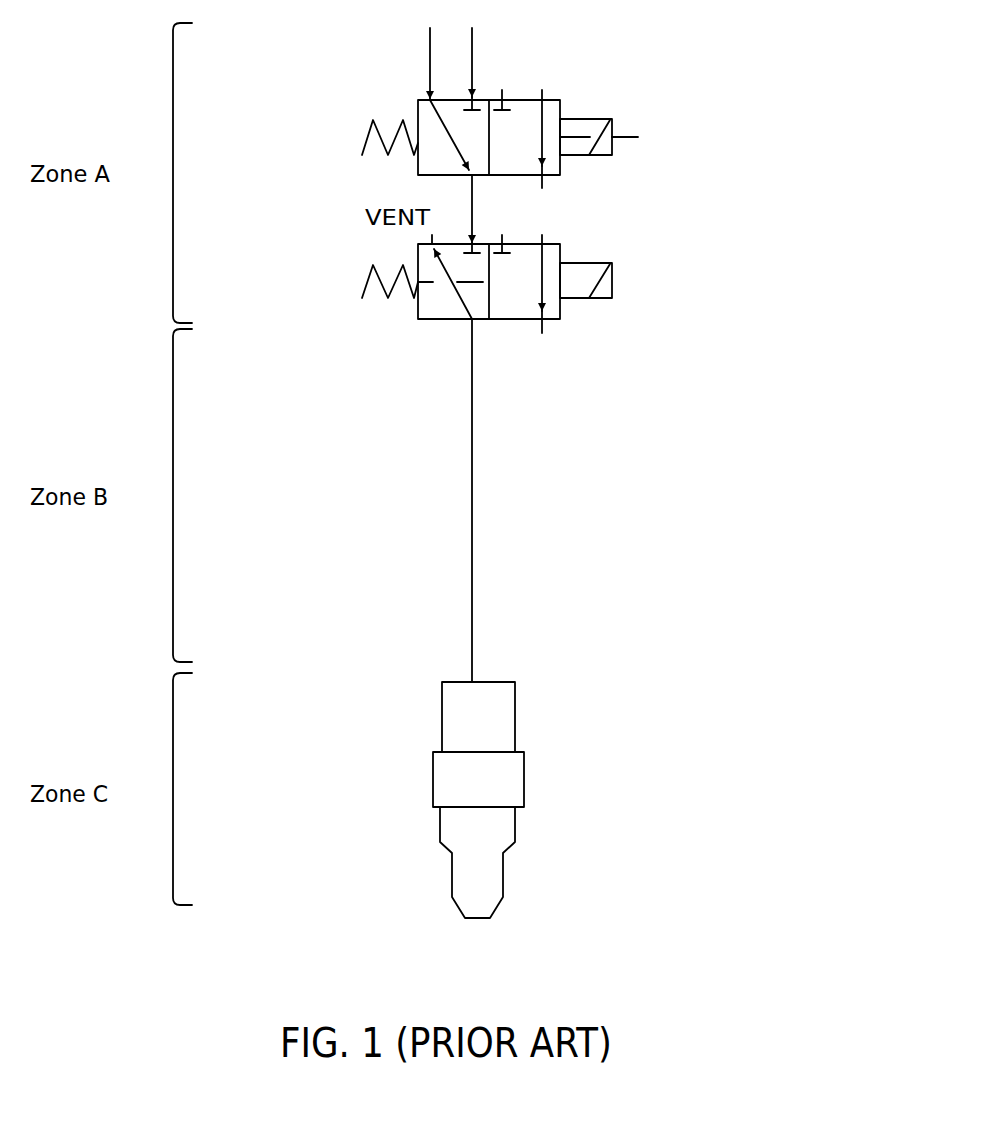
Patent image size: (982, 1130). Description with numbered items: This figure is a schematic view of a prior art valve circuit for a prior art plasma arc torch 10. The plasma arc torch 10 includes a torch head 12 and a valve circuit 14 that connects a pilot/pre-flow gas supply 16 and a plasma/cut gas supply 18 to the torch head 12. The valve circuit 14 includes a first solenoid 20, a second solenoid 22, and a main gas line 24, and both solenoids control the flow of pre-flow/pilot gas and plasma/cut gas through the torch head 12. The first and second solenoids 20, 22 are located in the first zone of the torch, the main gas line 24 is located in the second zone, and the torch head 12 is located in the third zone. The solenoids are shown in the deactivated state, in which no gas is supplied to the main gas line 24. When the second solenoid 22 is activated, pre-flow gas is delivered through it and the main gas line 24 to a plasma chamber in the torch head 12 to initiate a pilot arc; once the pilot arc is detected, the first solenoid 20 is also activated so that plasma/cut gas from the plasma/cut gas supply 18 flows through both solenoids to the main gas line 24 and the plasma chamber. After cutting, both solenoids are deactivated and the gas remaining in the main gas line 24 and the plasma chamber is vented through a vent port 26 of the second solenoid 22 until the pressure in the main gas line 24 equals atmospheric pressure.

The plasma arc torch 10 is at (787, 103).
The torch head 12 is at (431, 781).
The valve circuit 14 is at (623, 419).
The pilot/pre-flow gas supply 16 is at (431, 53).
The plasma/cut gas supply 18 is at (473, 58).
The first solenoid 20 is at (608, 160).
The second solenoid 22 is at (414, 323).
The main gas line 24 is at (470, 603).
The vent port 26 is at (460, 214).